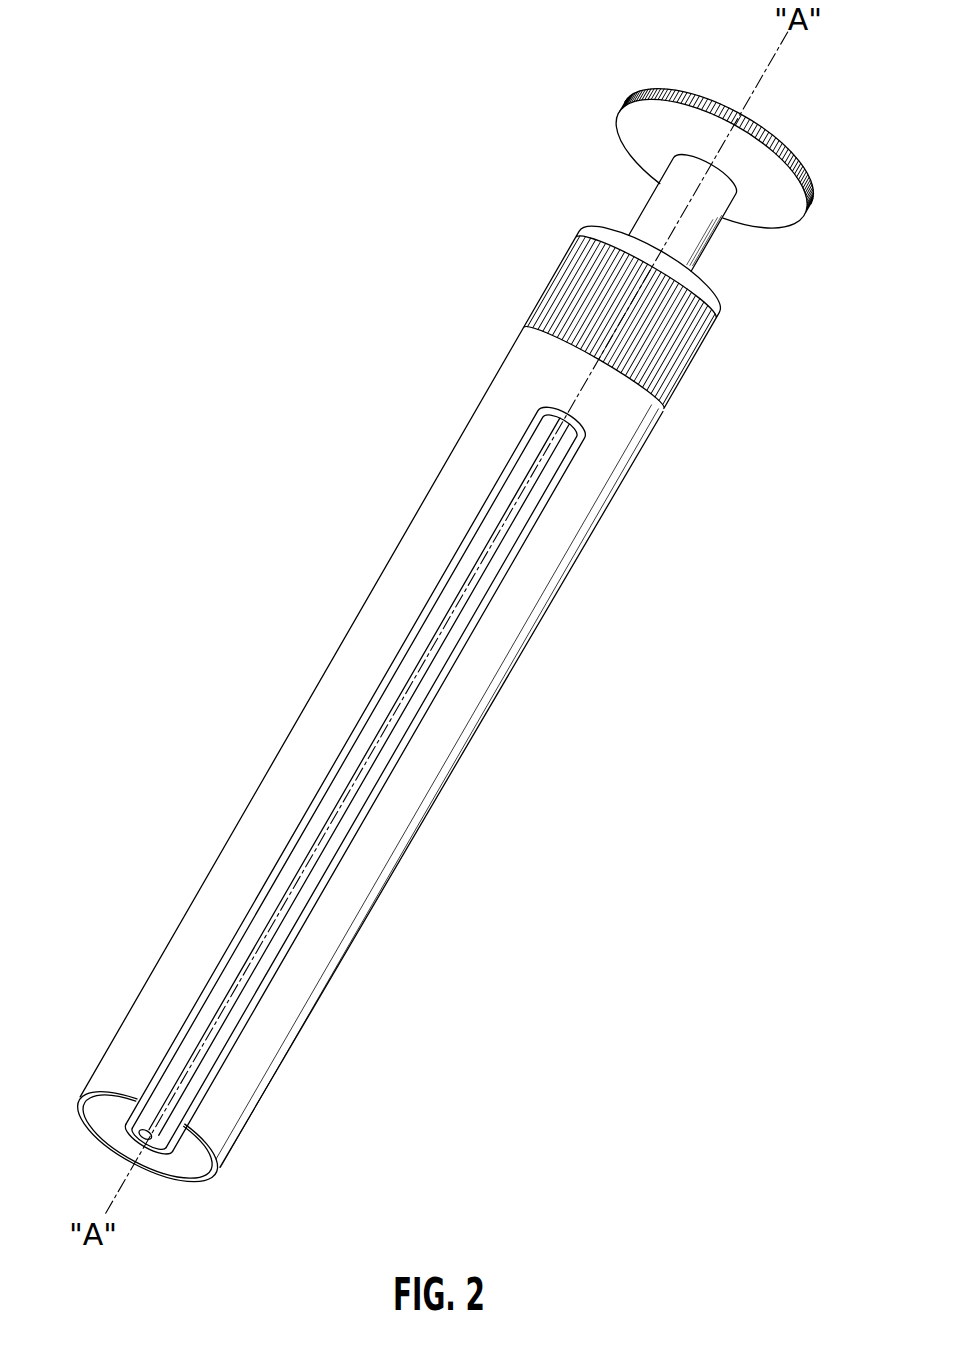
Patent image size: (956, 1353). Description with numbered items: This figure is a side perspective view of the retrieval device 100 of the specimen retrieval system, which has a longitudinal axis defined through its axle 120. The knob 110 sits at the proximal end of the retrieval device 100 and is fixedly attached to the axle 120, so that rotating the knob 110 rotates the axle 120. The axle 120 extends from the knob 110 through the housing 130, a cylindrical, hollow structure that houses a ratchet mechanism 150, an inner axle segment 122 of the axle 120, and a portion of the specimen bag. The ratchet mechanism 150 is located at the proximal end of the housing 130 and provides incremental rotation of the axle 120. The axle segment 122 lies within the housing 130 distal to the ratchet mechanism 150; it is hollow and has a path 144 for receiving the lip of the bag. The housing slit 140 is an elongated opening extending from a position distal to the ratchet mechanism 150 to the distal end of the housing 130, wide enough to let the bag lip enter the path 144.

The retrieval device 100 is at (226, 284).
The knob 110 is at (628, 104).
The axle 120 is at (658, 218).
The axle segment 122 is at (557, 407).
The housing 130 is at (400, 566).
The housing slit 140 is at (360, 757).
The path 144 is at (147, 1136).
The ratchet mechanism 150 is at (565, 283).